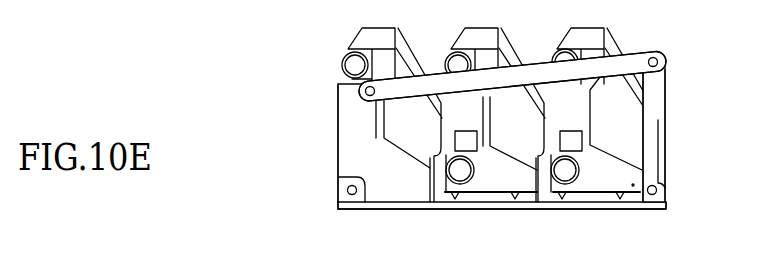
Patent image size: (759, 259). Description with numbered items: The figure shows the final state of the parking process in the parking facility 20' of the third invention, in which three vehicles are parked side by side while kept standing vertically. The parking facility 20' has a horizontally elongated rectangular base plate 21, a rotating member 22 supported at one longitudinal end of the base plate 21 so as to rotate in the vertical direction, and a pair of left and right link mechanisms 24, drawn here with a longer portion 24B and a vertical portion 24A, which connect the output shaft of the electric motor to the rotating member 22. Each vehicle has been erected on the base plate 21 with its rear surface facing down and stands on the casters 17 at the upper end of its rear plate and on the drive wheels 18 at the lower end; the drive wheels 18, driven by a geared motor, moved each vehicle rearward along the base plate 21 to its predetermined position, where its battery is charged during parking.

The parking facility 20' is at (530, 131).
The rotating member 22 is at (339, 148).
The base plate 21 is at (491, 209).
The caster 17 is at (614, 198).
The drive wheel 18 is at (562, 199).
The link mechanism 24 is at (665, 53).
The vertical portion of arm 24A is at (664, 152).
The horizontal portion of arm 24B is at (510, 88).